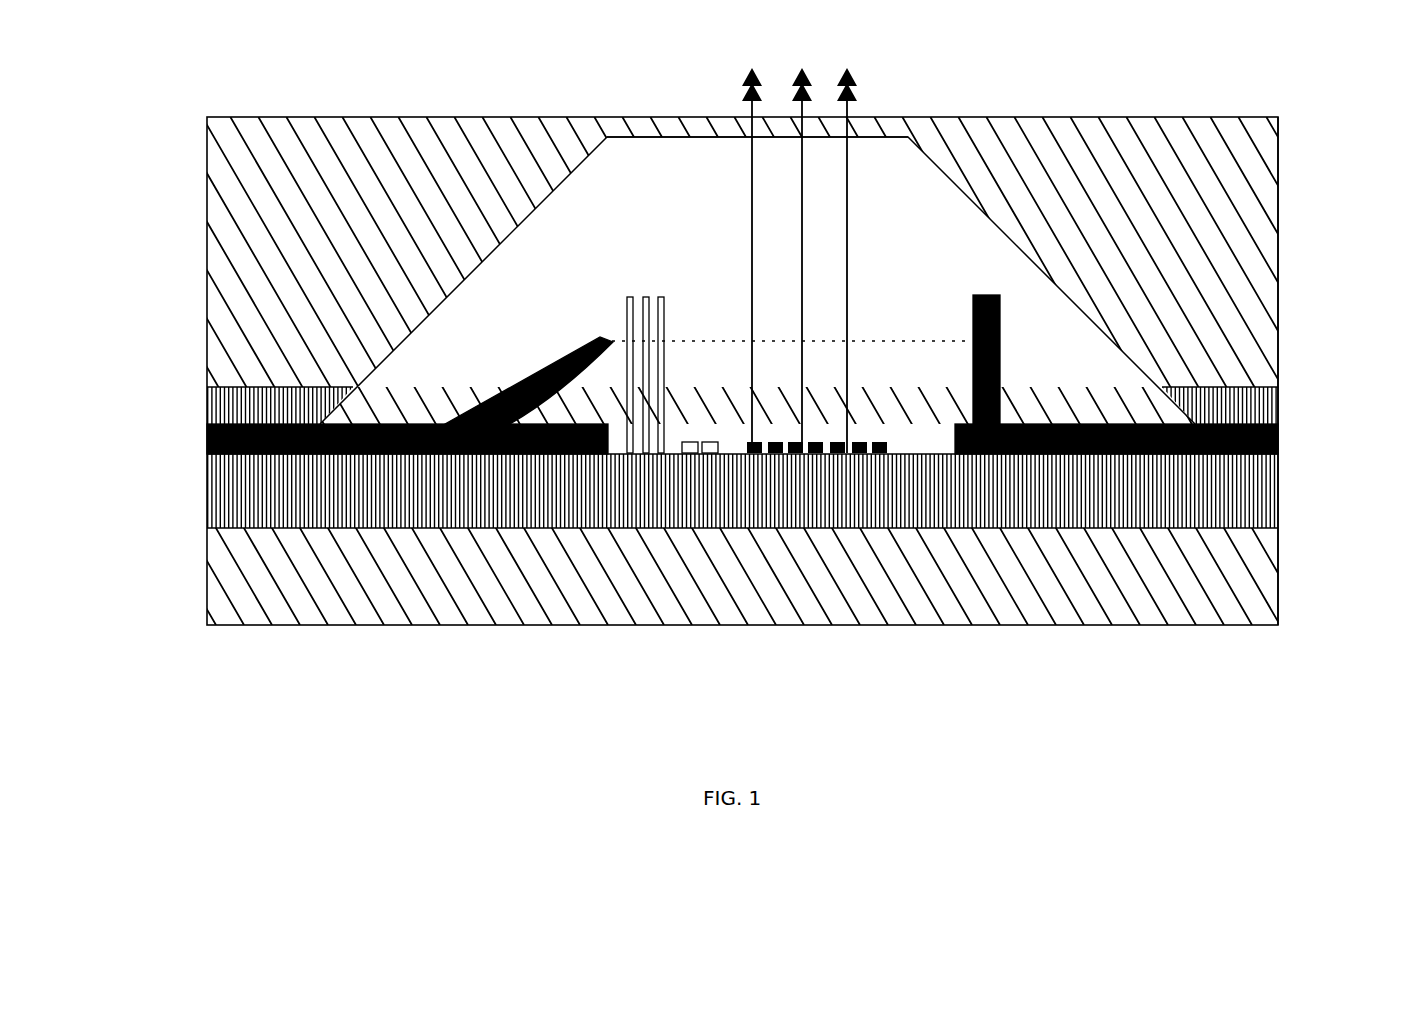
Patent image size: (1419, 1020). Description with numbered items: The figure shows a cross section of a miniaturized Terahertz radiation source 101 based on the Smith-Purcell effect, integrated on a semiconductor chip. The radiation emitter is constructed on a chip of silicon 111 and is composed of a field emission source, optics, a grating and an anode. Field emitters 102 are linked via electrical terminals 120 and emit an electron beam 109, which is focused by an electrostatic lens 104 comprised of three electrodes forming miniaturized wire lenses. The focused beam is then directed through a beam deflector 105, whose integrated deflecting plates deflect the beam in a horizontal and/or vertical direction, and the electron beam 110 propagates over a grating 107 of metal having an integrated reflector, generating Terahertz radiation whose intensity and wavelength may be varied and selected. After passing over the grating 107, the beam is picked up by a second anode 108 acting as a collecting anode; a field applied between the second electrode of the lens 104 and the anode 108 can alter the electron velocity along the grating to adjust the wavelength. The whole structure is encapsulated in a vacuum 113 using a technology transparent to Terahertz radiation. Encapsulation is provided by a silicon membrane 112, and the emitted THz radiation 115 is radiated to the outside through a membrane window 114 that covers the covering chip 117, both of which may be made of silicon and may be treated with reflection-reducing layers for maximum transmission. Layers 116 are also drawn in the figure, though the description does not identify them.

The miniaturized Terahertz radiation source 101 is at (668, 672).
The field emitter 102 is at (590, 342).
The electrostatic lens 104 is at (640, 297).
The beam deflector 105 is at (700, 440).
The grating 107 is at (782, 440).
The second anode 108 is at (975, 297).
The electron beam 109 is at (715, 340).
The electron beam 110 is at (877, 340).
The chip of silicon 111 is at (1117, 117).
The silicon membrane 112 is at (1280, 493).
The vacuum 113 is at (710, 252).
The membrane window 114 is at (712, 145).
The THz radiation 115 is at (850, 107).
The dielectric layer 116 is at (207, 402).
The covering chip 117 is at (1282, 260).
The electrical terminals 120 is at (207, 437).